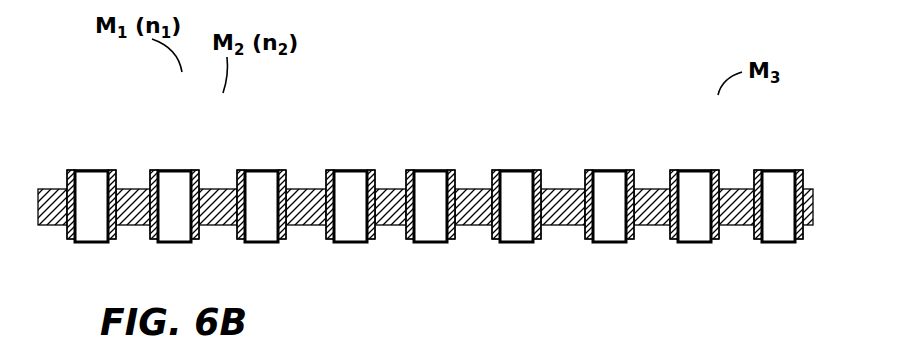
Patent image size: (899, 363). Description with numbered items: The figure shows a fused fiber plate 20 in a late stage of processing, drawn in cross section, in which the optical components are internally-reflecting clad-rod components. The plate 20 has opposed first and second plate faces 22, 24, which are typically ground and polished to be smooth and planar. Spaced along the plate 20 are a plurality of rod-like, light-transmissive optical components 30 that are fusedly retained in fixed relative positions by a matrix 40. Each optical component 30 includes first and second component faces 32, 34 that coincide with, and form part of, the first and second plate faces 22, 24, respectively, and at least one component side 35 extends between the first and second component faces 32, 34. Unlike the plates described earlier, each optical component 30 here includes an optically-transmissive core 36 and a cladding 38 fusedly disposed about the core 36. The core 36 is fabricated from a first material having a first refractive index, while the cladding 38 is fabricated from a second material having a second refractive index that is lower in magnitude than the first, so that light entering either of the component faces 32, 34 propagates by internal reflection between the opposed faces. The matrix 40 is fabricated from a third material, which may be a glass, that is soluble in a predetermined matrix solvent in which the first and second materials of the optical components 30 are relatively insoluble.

The fused fiber plate 20 is at (412, 183).
The first plate face 22 is at (493, 170).
The second plate face 24 is at (507, 242).
The optical component 30 is at (433, 170).
The first component face 32 is at (423, 170).
The second component face 34 is at (430, 242).
The component side 35 is at (406, 184).
The core 36 is at (165, 170).
The cladding 38 is at (193, 170).
The matrix 40 is at (645, 190).